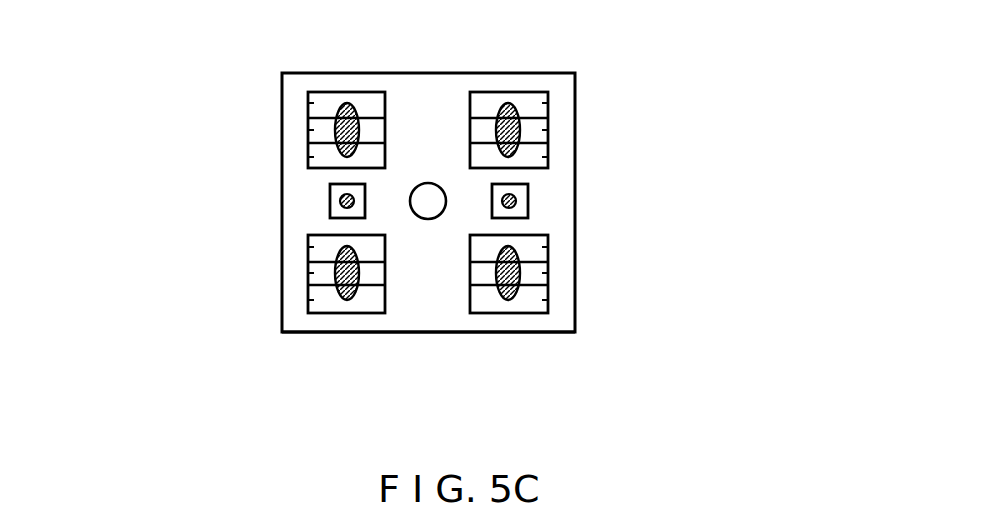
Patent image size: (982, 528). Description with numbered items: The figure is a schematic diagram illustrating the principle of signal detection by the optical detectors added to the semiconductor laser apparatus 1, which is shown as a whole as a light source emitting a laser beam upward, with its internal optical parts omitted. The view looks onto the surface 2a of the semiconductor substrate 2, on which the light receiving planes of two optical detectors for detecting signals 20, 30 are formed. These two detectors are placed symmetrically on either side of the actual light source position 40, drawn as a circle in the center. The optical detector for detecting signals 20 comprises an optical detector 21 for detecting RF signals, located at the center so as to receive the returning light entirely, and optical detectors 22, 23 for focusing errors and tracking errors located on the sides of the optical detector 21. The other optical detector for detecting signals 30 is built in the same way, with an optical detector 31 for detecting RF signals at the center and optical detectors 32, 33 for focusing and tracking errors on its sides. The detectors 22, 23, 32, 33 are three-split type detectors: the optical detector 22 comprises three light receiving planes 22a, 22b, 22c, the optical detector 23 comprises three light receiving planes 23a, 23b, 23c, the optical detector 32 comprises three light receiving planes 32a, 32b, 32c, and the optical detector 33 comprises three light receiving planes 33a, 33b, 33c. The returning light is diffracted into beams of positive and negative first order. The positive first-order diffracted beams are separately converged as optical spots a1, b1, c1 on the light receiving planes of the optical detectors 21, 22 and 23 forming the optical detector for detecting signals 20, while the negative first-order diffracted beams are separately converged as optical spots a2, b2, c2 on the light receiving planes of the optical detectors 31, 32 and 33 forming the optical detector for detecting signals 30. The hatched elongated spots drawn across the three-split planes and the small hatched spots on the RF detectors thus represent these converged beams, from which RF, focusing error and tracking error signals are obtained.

The semiconductor laser apparatus 1 is at (604, 349).
The semiconductor substrate 2 is at (408, 100).
The surface of semiconductor substrate 2a is at (400, 320).
The optical spot a1 is at (492, 200).
The optical spot a2 is at (340, 205).
The optical spot b1 is at (510, 300).
The optical spot b2 is at (340, 296).
The optical spot c1 is at (516, 107).
The optical spot c2 is at (338, 108).
The optical detector for detecting signals 20 is at (83, 87).
The optical detector for detecting RF signals 21 is at (330, 187).
The optical detector for focusing errors and tracking errors 22 is at (158, 63).
The light receiving plane 22a is at (314, 103).
The light receiving plane 22b is at (314, 130).
The light receiving plane 22c is at (314, 157).
The optical detector for focusing errors and tracking errors 23 is at (158, 223).
The light receiving plane 23a is at (314, 247).
The light receiving plane 23b is at (314, 273).
The light receiving plane 23c is at (314, 300).
The optical detector for detecting signals 30 is at (779, 87).
The optical detector for detecting RF signals 31 is at (528, 190).
The optical detector for focusing errors and tracking errors 32 is at (699, 63).
The light receiving plane 32a is at (542, 103).
The light receiving plane 32b is at (542, 130).
The light receiving plane 32c is at (542, 157).
The optical detector for focusing errors and tracking errors 33 is at (699, 223).
The light receiving plane 33a is at (542, 247).
The light receiving plane 33b is at (542, 273).
The light receiving plane 33c is at (542, 300).
The actual light source position 40 is at (428, 219).